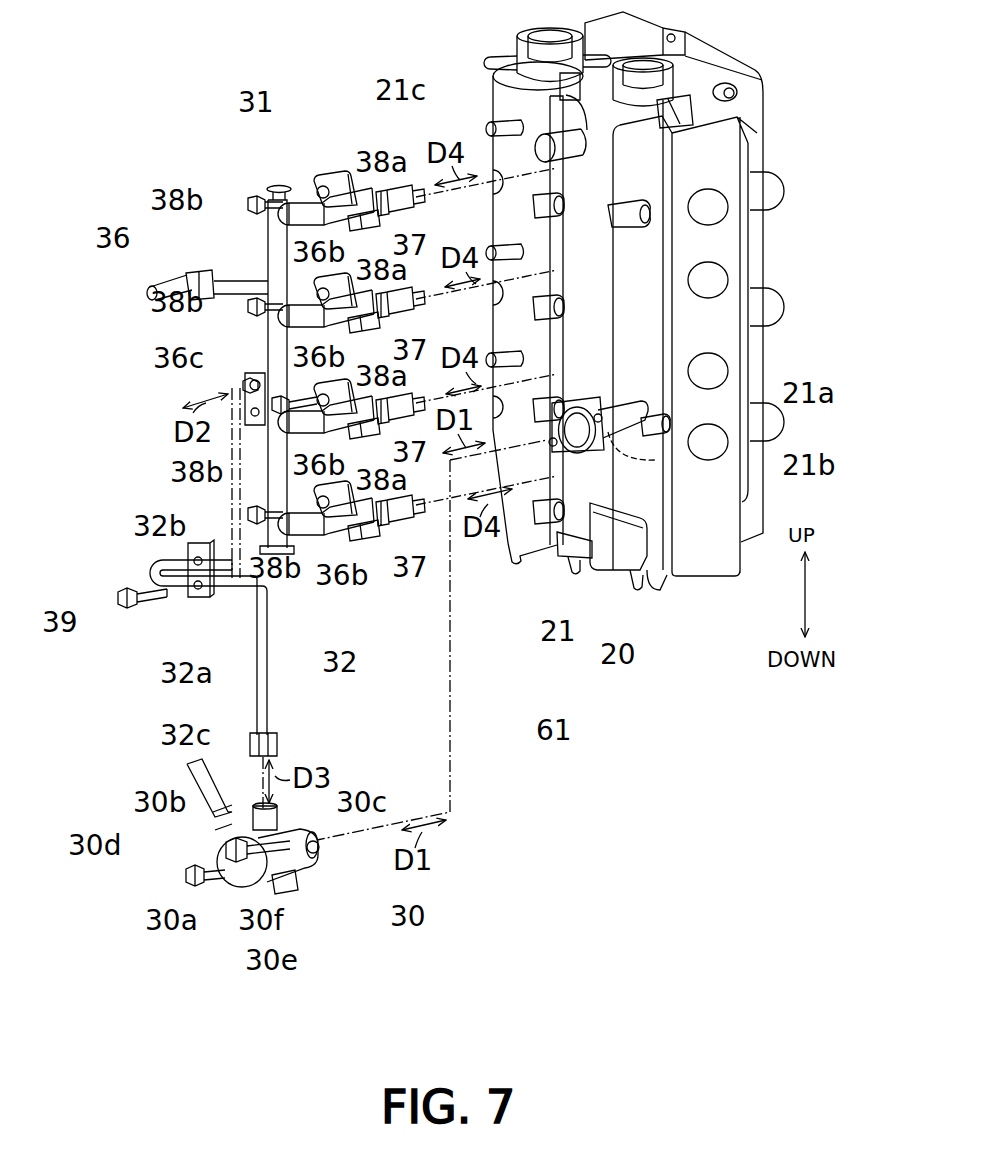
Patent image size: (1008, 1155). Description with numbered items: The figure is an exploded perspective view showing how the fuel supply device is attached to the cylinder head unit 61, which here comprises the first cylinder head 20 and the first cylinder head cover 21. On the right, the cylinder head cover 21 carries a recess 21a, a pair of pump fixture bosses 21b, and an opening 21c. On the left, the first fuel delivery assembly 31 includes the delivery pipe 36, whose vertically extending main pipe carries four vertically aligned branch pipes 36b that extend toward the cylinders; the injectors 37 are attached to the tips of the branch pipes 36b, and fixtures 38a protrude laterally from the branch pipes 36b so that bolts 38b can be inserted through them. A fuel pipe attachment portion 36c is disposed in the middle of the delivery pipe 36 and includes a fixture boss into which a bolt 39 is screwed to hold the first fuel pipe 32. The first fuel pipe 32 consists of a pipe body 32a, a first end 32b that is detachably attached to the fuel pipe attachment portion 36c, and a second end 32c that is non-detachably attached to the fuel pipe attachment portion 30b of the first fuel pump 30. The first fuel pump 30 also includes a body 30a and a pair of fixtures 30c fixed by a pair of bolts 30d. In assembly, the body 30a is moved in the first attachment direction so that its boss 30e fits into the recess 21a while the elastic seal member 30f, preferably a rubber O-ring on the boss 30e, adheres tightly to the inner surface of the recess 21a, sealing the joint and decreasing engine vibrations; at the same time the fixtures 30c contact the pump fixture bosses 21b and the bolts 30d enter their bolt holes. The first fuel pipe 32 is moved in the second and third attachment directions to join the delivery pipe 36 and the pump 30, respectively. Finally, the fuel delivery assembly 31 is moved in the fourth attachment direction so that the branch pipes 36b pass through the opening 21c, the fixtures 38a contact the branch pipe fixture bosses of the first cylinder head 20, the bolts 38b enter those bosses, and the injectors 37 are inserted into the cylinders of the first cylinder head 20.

The first cylinder head 20 is at (697, 578).
The first cylinder head cover 21 is at (600, 577).
The recess 21a is at (780, 396).
The pump fixture bosses 21b is at (780, 468).
The opening 21c is at (553, 113).
The first fuel pump 30 is at (339, 881).
The body 30a is at (238, 880).
The fuel pipe attachment portion 30b is at (214, 808).
The fixtures 30c is at (300, 830).
The bolts 30d is at (190, 872).
The boss 30e is at (305, 893).
The elastic seal member 30f is at (306, 860).
The first fuel delivery assembly 31 is at (283, 172).
The first fuel pipe 32 is at (282, 632).
The pipe body 32a is at (256, 655).
The first end 32b is at (227, 550).
The second end 32c is at (250, 745).
The delivery pipe 36 is at (266, 240).
The branch pipes 36b is at (330, 538).
The fuel pipe attachment portion 36c is at (247, 380).
The injectors 37 is at (398, 524).
The fixtures 38a is at (340, 496).
The bolts 38b is at (252, 522).
The bolt 39 is at (118, 600).
The cylinder head unit 61 is at (578, 667).